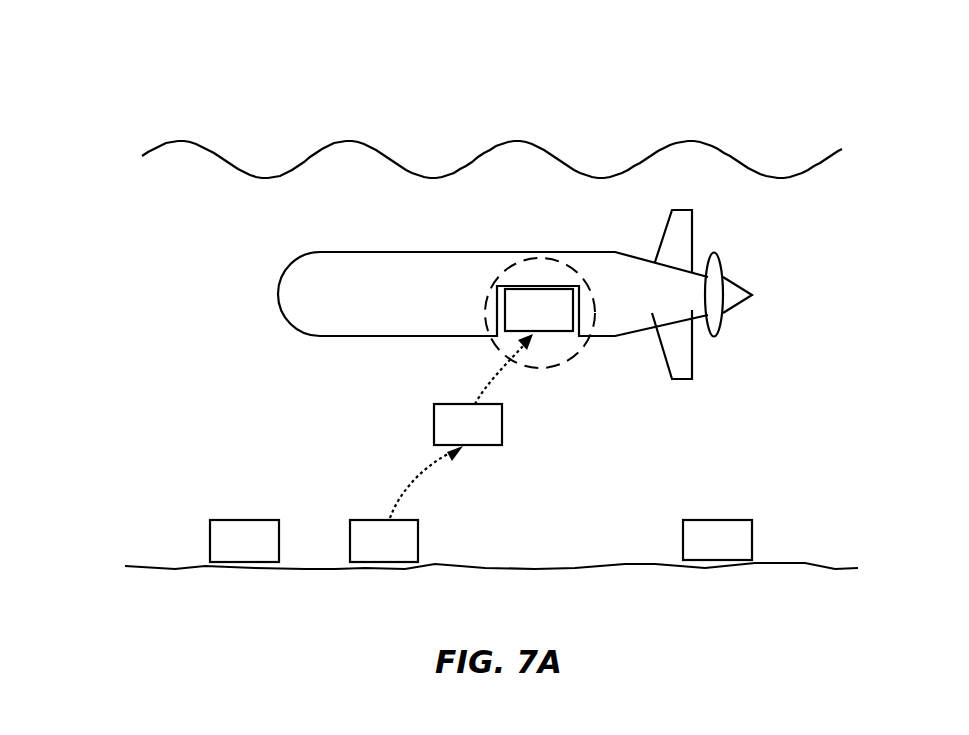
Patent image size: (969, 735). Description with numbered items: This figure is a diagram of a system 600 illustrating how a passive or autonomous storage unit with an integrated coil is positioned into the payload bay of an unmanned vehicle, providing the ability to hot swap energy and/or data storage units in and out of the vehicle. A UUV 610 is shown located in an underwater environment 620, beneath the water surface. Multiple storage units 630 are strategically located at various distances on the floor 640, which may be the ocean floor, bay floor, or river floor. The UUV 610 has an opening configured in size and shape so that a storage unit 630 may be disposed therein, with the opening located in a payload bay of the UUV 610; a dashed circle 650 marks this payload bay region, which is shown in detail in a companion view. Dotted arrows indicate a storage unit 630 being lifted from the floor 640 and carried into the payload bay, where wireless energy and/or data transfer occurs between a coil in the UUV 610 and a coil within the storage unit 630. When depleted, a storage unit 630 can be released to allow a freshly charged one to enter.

The underwater communication system 600 is at (126, 71).
The UUV 610 is at (278, 295).
The underwater environment 620 is at (808, 415).
The storage unit 630 is at (434, 425).
The floor 640 is at (838, 567).
The dashed circle 650 is at (517, 263).